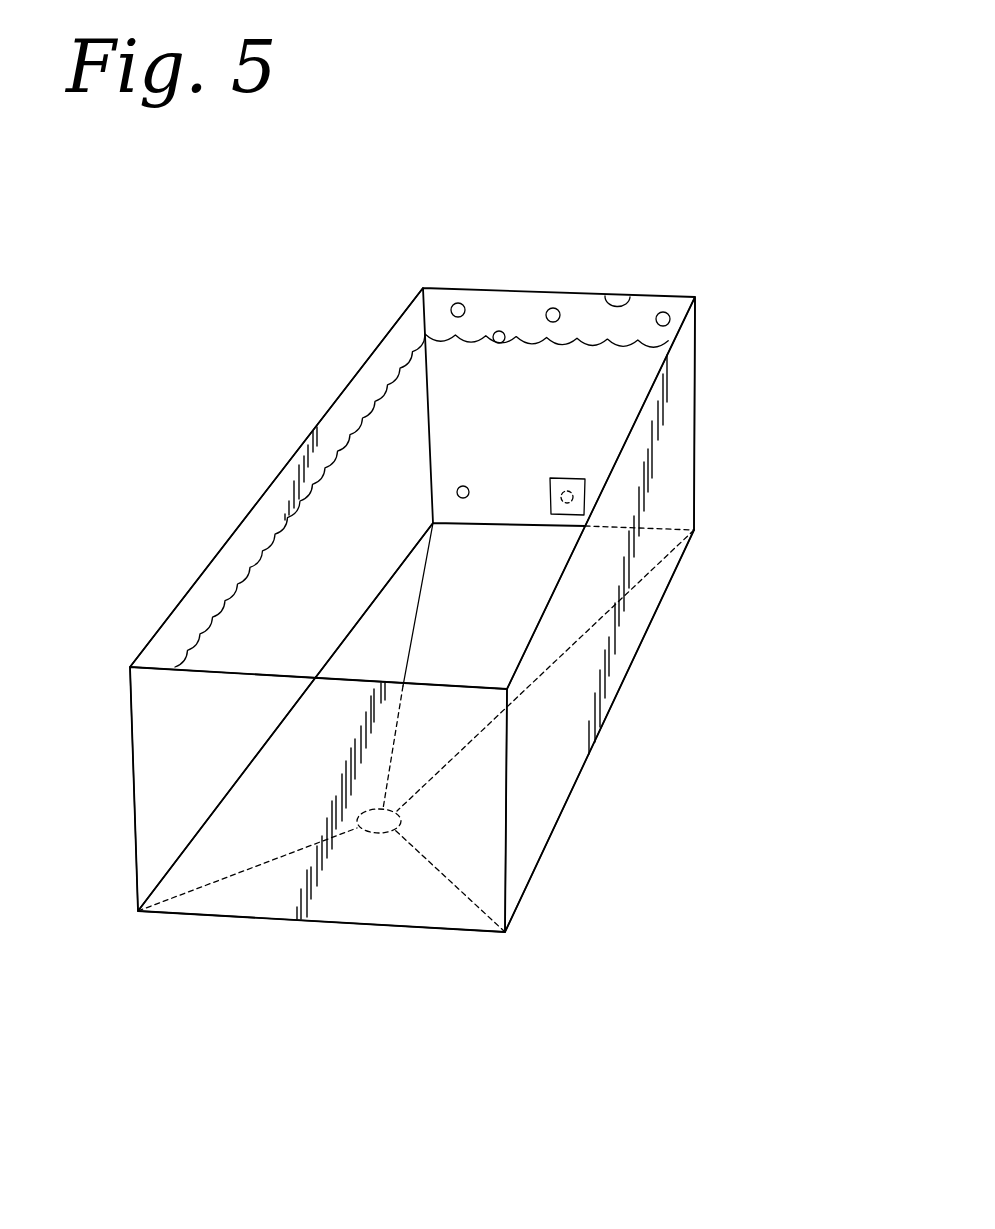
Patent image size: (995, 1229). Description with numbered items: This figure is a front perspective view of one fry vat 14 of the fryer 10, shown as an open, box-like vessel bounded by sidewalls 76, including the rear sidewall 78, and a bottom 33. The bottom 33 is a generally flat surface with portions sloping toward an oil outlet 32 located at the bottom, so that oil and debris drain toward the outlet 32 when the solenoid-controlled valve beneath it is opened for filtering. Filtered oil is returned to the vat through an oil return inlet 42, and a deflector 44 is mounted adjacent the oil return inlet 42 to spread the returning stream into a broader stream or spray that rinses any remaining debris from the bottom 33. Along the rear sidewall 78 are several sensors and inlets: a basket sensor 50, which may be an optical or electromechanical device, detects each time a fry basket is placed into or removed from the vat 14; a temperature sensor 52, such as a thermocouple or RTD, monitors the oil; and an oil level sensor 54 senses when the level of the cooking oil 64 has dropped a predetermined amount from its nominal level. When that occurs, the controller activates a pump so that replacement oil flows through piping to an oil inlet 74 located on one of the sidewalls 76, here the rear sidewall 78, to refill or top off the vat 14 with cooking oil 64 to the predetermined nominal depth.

The fryer 10 is at (355, 303).
The fry vat 14 is at (713, 457).
The oil outlet 32 is at (401, 821).
The bottom 33 is at (395, 892).
The oil return inlet 42 is at (573, 489).
The deflector 44 is at (554, 478).
The basket sensor 50 is at (461, 303).
The temperature sensor 52 is at (464, 486).
The oil level sensor 54 is at (502, 331).
The cooking oil 64 is at (367, 480).
The oil inlet 74 is at (556, 308).
The sidewalls 76 is at (211, 560).
The rear sidewall 78 is at (632, 295).